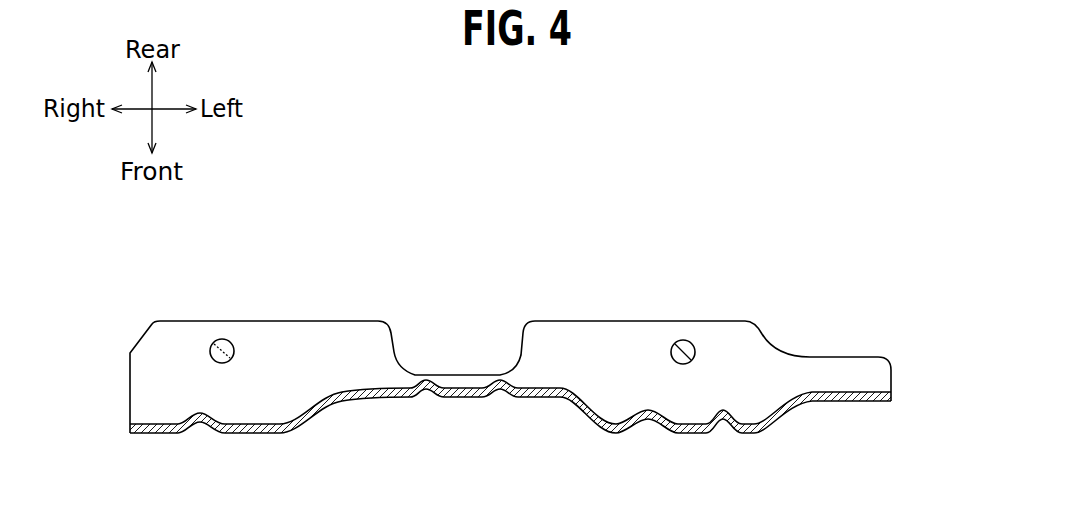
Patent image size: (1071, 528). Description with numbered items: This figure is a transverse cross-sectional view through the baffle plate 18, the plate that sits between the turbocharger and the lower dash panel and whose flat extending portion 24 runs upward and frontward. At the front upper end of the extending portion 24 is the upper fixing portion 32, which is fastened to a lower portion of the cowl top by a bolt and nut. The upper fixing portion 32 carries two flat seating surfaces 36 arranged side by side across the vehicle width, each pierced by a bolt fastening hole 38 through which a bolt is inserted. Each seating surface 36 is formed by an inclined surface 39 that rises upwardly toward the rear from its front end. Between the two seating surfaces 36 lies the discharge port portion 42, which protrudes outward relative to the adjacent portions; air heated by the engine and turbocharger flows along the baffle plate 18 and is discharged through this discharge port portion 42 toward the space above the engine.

The baffle plate 18 is at (817, 320).
The extending portion 24 is at (893, 378).
The upper fixing portion 32 is at (261, 290).
The seating surface 36 is at (343, 342).
The bolt fastening hole 38 is at (226, 339).
The inclined surface 39 is at (158, 383).
The discharge port portion 42 is at (458, 416).